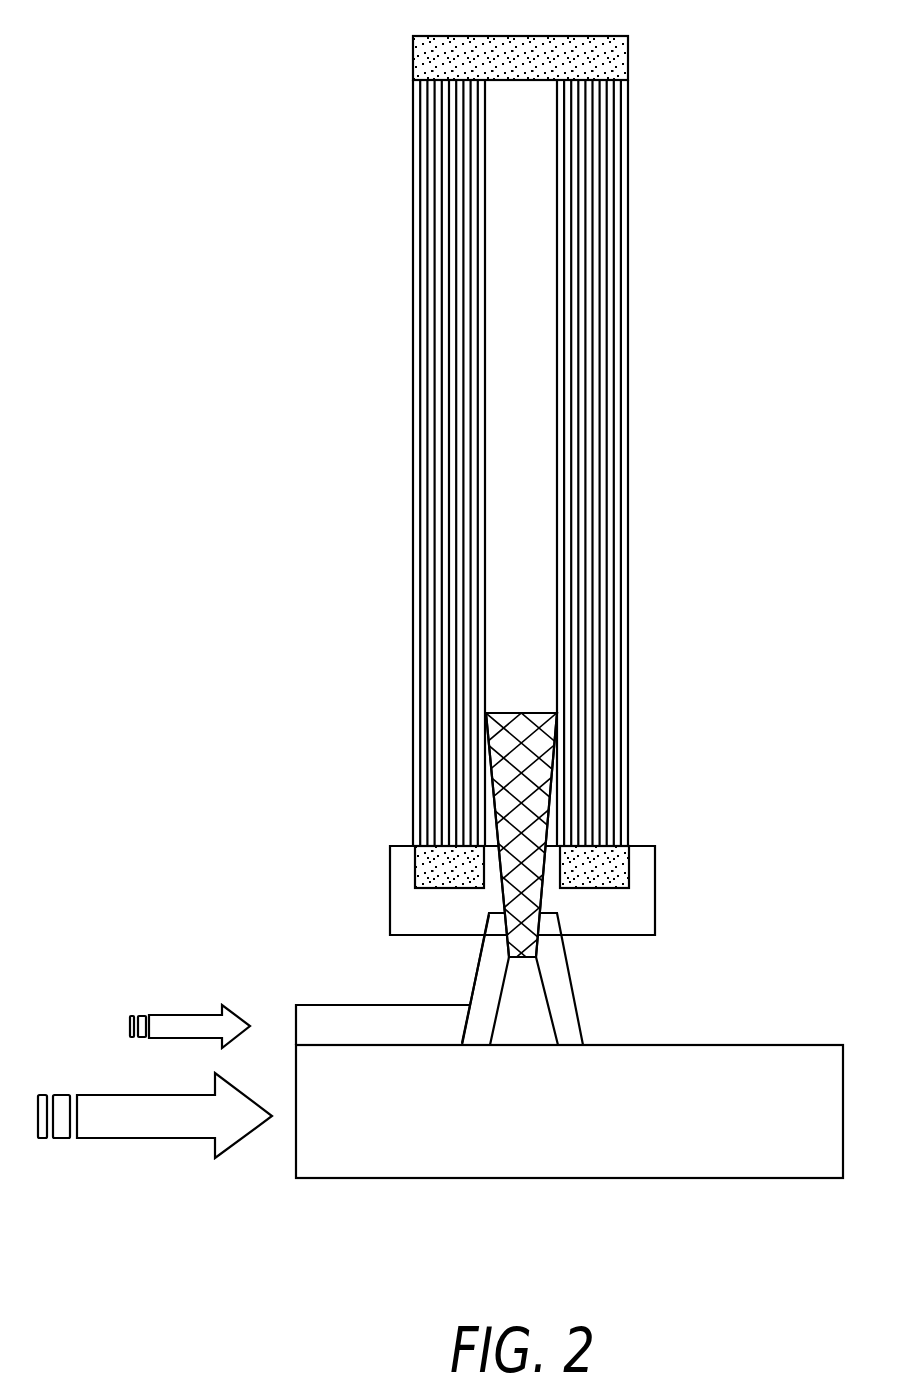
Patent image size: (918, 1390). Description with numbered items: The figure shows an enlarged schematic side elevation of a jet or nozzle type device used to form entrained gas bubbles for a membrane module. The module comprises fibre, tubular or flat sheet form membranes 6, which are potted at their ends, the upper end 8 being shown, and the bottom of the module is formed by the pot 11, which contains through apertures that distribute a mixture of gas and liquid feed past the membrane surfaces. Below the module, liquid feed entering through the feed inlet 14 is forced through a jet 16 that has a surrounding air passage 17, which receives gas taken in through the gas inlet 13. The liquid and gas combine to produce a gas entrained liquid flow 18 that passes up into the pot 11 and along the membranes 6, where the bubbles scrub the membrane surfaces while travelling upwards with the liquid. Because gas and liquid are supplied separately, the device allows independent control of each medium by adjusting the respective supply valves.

The membranes 6 is at (622, 510).
The potted end 8 is at (630, 52).
The pot 11 is at (638, 918).
The gas inlet 13 is at (340, 1020).
The feed inlet 14 is at (405, 1158).
The jet 16 is at (523, 1012).
The surrounding air passage 17 is at (490, 983).
The gas entrained liquid flow 18 is at (528, 763).